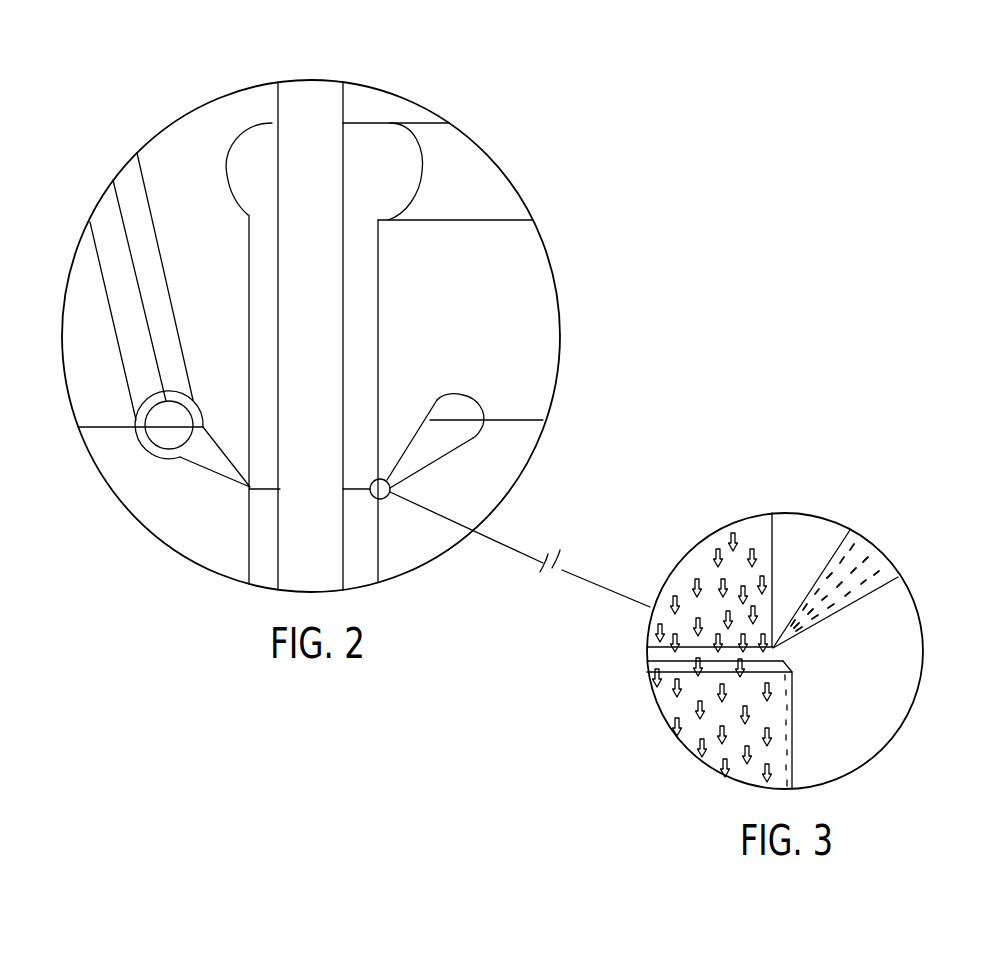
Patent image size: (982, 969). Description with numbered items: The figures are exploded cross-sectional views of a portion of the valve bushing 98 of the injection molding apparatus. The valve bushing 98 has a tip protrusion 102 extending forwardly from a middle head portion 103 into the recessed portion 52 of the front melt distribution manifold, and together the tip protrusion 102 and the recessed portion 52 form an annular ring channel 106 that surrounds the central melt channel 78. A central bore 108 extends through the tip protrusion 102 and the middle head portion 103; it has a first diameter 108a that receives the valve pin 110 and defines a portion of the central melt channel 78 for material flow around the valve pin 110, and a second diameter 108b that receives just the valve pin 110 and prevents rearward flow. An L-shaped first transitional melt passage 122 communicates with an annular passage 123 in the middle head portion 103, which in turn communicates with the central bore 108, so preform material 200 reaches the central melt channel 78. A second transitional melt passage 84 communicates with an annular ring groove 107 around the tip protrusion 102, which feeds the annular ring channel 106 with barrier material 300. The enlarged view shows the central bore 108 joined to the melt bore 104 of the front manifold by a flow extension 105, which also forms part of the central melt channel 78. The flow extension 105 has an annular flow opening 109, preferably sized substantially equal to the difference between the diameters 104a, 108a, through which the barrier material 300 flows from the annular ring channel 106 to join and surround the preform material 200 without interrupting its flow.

In FIG. 2, the recessed portion 52 is at (452, 452).
In FIG. 2, the central melt channel 78 is at (249, 552).
In FIG. 2, the second transitional melt passage 84 is at (133, 188).
In FIG. 2, the valve bushing 98 is at (513, 265).
In FIG. 2, the tip protrusion 102 is at (393, 448).
In FIG. 2, the middle head portion 103 is at (517, 233).
In FIG. 2, the melt bore 104 is at (383, 543).
In FIG. 3, the melt bore 104 is at (689, 756).
In FIG. 3, the diameter of the melt bore 104a is at (792, 740).
In FIG. 3, the flow extension 105 is at (789, 657).
In FIG. 2, the annular ring channel 106 is at (450, 435).
In FIG. 3, the annular ring channel 106 is at (876, 547).
In FIG. 2, the annular ring groove 107 is at (462, 406).
In FIG. 2, the central bore 108 is at (378, 318).
In FIG. 3, the central bore 108 is at (687, 554).
In FIG. 2, the first diameter 108a is at (380, 288).
In FIG. 3, the first diameter 108a is at (769, 525).
In FIG. 2, the second diameter 108b is at (346, 98).
In FIG. 3, the annular flow opening 109 is at (775, 638).
In FIG. 2, the valve pin 110 is at (322, 85).
In FIG. 2, the first transitional melt passage 122 is at (485, 173).
In FIG. 2, the annular passage 123 is at (400, 158).
In FIG. 3, the preform material 200 is at (722, 538).
In FIG. 3, the barrier material 300 is at (880, 570).